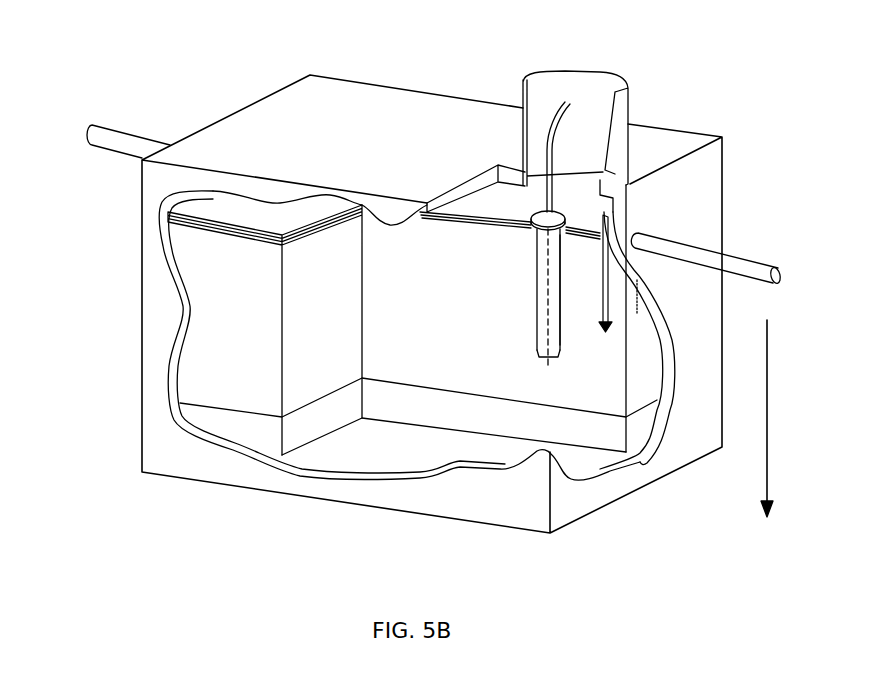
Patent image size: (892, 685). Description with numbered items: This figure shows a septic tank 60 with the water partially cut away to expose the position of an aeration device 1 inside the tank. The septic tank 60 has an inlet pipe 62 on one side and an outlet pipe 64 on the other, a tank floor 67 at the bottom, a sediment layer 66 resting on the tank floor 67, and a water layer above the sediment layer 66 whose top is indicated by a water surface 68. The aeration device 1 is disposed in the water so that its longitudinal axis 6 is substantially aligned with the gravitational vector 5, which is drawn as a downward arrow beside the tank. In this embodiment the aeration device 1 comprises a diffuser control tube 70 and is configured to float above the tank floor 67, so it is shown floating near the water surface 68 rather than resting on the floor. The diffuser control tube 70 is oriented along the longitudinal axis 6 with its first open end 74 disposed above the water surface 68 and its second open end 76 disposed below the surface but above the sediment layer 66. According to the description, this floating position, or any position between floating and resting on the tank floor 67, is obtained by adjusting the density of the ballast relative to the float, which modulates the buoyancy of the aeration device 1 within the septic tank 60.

The septic tank 60 is at (260, 120).
The inlet pipe 62 is at (113, 137).
The outlet pipe 64 is at (733, 267).
The sediment layer 66 is at (213, 407).
The tank floor 67 is at (415, 445).
The water surface 68 is at (202, 235).
The diffuser control tube 70 is at (538, 275).
The first open end 74 is at (540, 210).
The second open end 76 is at (555, 357).
The longitudinal axis 6 is at (548, 370).
The aeration device 1 is at (557, 307).
The gravitational vector 5 is at (768, 403).